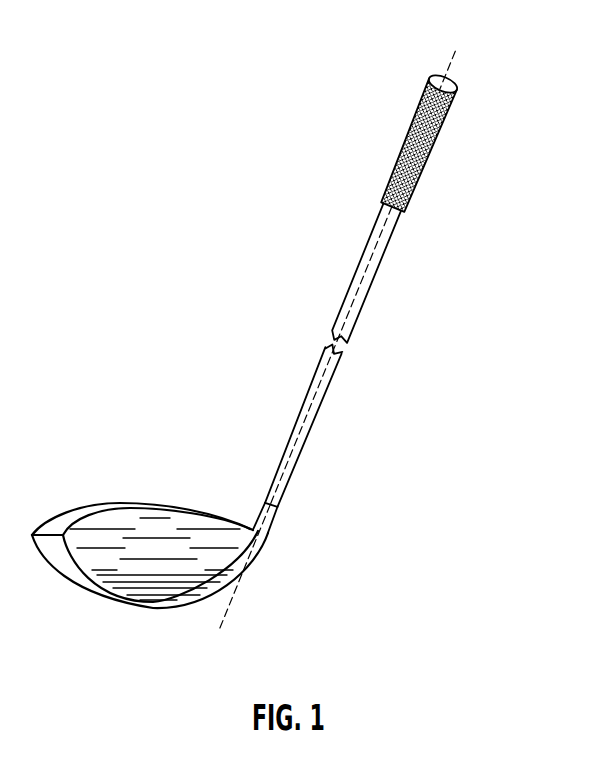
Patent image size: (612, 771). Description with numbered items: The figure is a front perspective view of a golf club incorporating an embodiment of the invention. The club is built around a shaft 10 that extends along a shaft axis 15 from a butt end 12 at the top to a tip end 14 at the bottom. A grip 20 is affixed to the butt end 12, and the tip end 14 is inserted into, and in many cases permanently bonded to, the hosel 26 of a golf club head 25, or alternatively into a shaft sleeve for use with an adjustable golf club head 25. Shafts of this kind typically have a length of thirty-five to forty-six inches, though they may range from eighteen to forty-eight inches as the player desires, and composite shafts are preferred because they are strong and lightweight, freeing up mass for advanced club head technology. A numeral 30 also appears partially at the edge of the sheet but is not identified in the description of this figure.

The shaft 10 is at (368, 292).
The butt end 12 is at (433, 77).
The tip end 14 is at (276, 507).
The shaft axis 15 is at (450, 64).
The grip 20 is at (425, 163).
The golf club head 25 is at (230, 583).
The hosel 26 is at (278, 517).
The club head (partial numeral) 30 is at (525, 763).